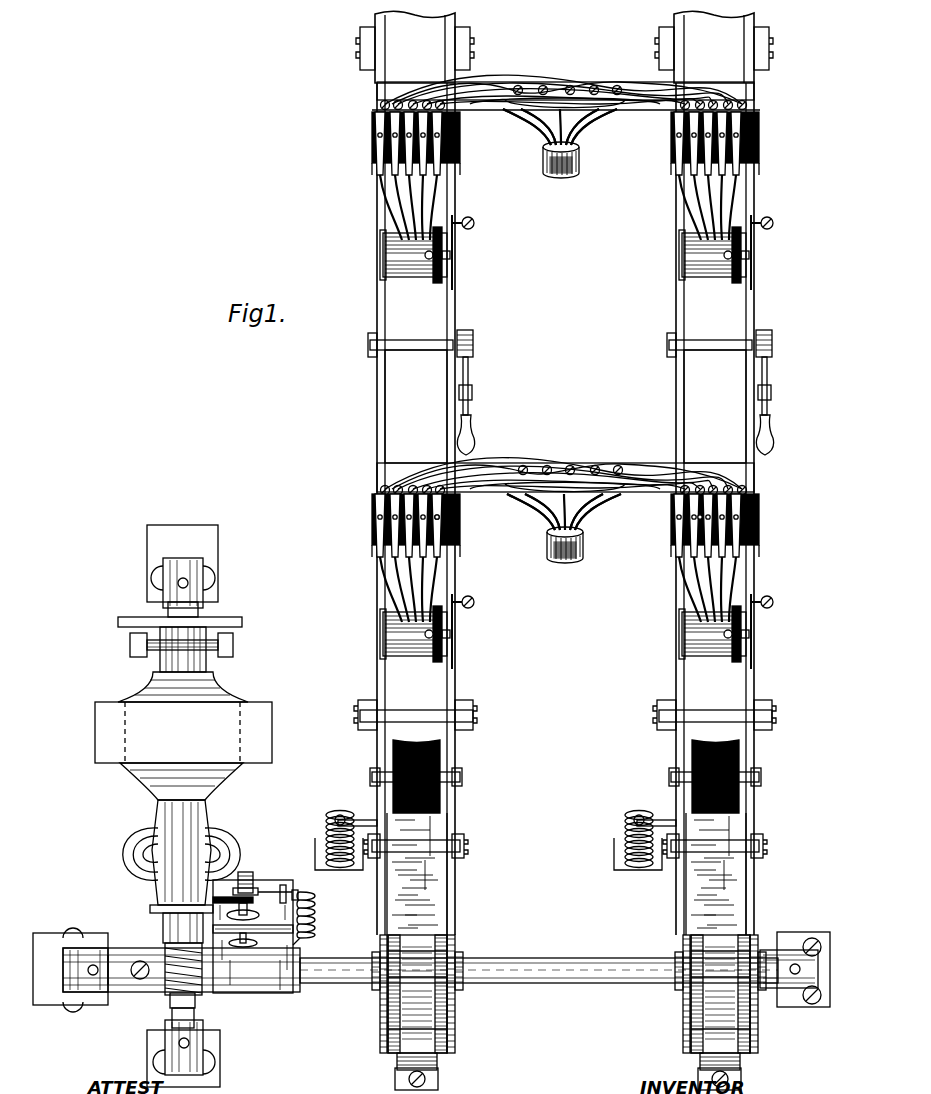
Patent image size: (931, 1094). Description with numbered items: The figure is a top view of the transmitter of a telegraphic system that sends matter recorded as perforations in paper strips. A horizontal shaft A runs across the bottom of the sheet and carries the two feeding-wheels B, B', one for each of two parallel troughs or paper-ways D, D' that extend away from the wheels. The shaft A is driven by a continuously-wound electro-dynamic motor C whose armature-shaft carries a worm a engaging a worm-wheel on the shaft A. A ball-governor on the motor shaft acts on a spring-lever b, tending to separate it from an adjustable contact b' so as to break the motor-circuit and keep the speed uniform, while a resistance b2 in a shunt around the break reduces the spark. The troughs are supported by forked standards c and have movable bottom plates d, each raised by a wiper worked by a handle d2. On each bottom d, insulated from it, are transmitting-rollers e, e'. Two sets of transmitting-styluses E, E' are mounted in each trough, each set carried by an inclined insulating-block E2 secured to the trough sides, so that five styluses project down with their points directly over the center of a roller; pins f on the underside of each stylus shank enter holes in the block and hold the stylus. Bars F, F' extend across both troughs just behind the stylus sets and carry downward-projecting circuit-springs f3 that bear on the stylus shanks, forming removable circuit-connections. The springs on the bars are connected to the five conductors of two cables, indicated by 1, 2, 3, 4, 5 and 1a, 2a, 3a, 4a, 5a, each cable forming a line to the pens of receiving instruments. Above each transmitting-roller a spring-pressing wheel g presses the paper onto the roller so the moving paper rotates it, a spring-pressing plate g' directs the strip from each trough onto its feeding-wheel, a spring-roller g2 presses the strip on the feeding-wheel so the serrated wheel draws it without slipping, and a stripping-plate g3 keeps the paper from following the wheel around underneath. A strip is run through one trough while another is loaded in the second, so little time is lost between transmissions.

The horizontal shaft A is at (539, 958).
The feeding-wheel B is at (422, 994).
The feeding-wheel B' is at (727, 994).
The electro-dynamic motor C is at (225, 848).
The trough or paper-way D is at (441, 776).
The trough or paper-way D' is at (741, 776).
The set of transmitting-styluses E is at (561, 558).
The set of transmitting-styluses E' is at (562, 342).
The insulating-block E2 is at (460, 170).
The bar F is at (565, 463).
The bar F' is at (566, 81).
The worm a is at (158, 945).
The spring-lever b is at (253, 932).
The adjustable contact b' is at (248, 922).
The resistance b2 is at (296, 915).
The forked standard c is at (569, 372).
The bottom plate d is at (565, 406).
The handle d2 is at (470, 425).
The transmitting-roller e is at (576, 633).
The transmitting-roller e' is at (576, 256).
The pin f is at (568, 511).
The circuit-spring f3 is at (380, 107).
The spring-pressing wheel g is at (583, 455).
The spring-pressing plate g' is at (563, 895).
The spring-roller g2 is at (418, 816).
The stripping-plate g3 is at (577, 1071).
The cable conductor 1 is at (544, 521).
The cable conductor 2 is at (542, 533).
The cable conductor 3 is at (565, 562).
The cable conductor 4 is at (588, 535).
The cable conductor 5 is at (592, 518).
The cable conductor 1a is at (540, 133).
The cable conductor 2a is at (538, 149).
The cable conductor 3a is at (564, 176).
The cable conductor 4a is at (586, 150).
The cable conductor 5a is at (590, 133).